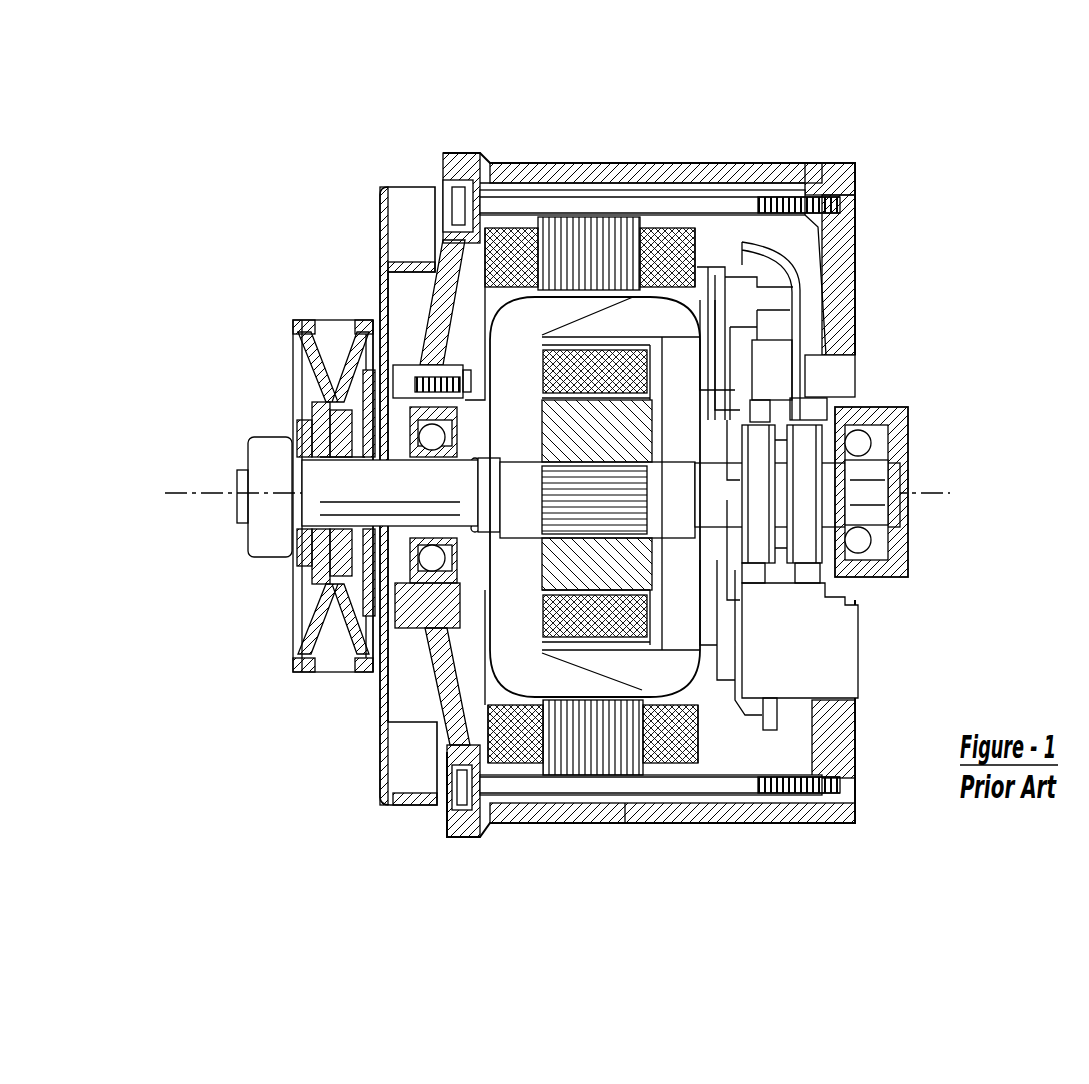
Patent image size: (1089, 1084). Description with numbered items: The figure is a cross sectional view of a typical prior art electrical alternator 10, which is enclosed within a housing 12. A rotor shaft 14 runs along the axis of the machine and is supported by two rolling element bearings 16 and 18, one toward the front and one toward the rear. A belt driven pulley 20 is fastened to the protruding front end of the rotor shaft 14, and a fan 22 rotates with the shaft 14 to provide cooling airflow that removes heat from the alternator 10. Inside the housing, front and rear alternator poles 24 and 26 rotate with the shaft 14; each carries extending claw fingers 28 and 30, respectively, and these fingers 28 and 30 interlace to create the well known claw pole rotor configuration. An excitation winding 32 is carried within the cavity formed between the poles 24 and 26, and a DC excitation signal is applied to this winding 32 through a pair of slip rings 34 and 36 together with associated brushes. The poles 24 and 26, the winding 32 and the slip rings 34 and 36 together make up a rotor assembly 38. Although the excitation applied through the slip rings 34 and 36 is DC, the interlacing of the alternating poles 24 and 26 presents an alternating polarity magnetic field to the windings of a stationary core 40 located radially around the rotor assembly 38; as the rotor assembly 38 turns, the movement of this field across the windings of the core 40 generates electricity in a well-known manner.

The electrical alternator 10 is at (920, 216).
The housing 12 is at (805, 163).
The rotor shaft 14 is at (370, 510).
The rolling element bearing 16 is at (373, 670).
The rolling element bearing 18 is at (868, 428).
The belt driven pulley 20 is at (317, 335).
The fan 22 is at (405, 220).
The front alternator pole 24 is at (512, 648).
The rear alternator pole 26 is at (682, 667).
The claw fingers 28 is at (573, 680).
The claw fingers 30 is at (640, 672).
The excitation winding 32 is at (620, 357).
The slip ring 34 is at (753, 467).
The slip ring 36 is at (802, 543).
The rotor assembly 38 is at (510, 260).
The stationary core 40 is at (505, 303).